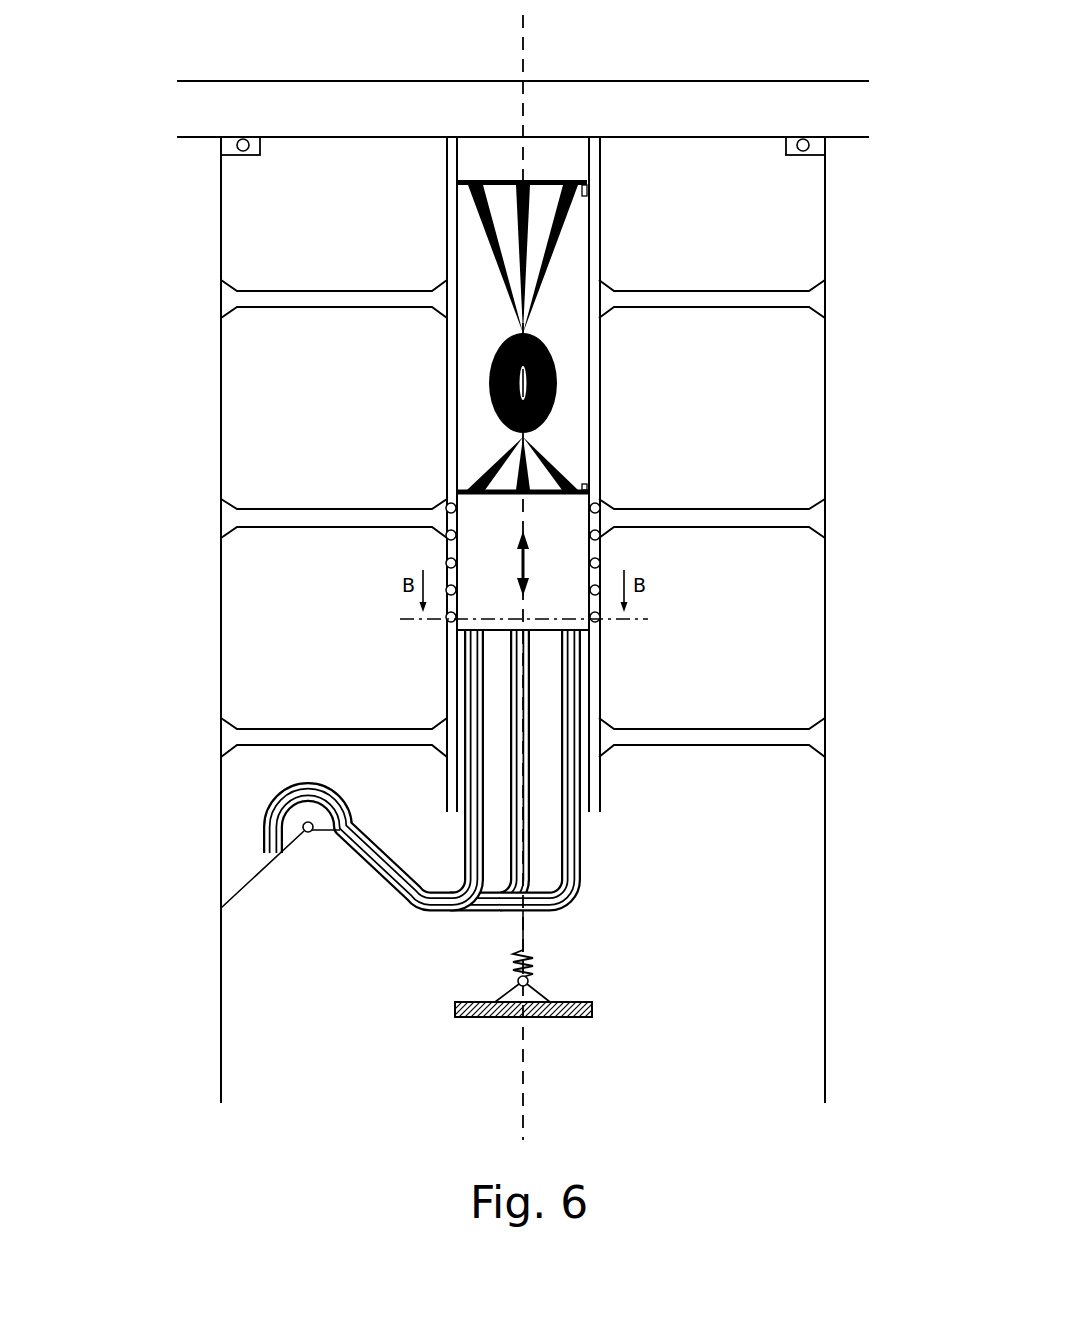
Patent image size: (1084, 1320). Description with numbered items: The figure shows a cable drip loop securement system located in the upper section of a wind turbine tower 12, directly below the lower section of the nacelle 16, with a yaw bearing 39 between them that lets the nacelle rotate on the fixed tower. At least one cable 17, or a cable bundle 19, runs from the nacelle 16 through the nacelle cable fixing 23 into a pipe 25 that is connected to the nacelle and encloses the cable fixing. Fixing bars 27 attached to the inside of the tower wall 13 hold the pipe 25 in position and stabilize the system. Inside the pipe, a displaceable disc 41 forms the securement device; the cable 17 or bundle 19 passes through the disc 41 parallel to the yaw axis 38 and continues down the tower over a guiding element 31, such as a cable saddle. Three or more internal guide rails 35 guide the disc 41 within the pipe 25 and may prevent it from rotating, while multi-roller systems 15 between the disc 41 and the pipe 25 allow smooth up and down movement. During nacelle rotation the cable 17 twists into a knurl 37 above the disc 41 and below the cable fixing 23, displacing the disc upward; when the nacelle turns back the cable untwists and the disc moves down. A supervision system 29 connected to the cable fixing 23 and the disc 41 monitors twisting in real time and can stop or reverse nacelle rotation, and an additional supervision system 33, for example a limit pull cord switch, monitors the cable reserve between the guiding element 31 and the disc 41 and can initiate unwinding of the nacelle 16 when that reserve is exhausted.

The tower 12 is at (145, 452).
The tower wall 13 is at (221, 600).
The multi-roller systems 15 is at (430, 563).
The nacelle 16 is at (230, 81).
The cable 17 is at (465, 848).
The cable bundle 19 is at (590, 884).
The nacelle cable fixing 23 is at (465, 137).
The pipe 25 is at (447, 412).
The fixing bars 27 is at (221, 300).
The supervision system 29 is at (590, 188).
The guiding element 31 is at (313, 835).
The supervision system 33 is at (592, 1008).
The internal guide rails 35 is at (600, 407).
The knurl 37 is at (478, 384).
The yaw axis 38 is at (525, 47).
The yaw bearing 39 is at (812, 145).
The disc 41 is at (590, 630).